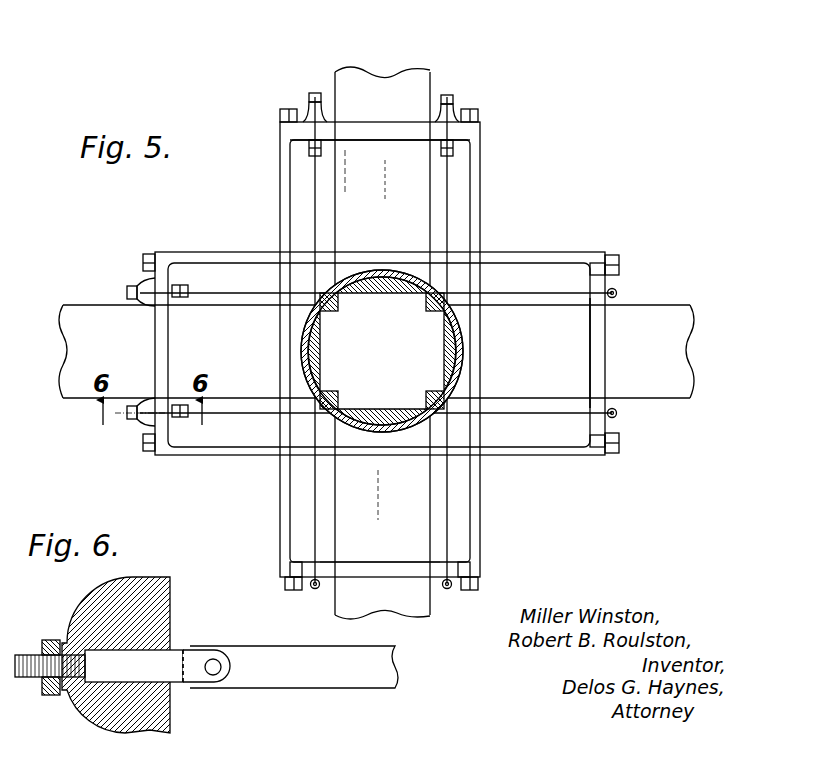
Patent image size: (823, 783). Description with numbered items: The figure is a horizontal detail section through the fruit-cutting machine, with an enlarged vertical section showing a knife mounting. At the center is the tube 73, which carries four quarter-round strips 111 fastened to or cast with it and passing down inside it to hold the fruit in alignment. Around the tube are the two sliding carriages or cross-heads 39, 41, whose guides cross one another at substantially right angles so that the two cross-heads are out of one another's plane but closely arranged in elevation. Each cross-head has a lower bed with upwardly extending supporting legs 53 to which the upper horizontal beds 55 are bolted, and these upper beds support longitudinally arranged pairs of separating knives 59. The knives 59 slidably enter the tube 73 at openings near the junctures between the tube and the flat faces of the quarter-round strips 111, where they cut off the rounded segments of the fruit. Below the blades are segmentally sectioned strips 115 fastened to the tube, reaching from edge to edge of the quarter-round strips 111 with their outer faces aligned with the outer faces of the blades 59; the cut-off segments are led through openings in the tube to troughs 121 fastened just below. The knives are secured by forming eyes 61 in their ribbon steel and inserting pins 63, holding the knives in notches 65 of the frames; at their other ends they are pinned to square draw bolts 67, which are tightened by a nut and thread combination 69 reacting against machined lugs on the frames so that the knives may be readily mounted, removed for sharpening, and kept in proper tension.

In FIG. 5, the cross-head 39 is at (245, 452).
In FIG. 5, the cross-head 41 is at (385, 130).
In FIG. 5, the supporting legs 53 is at (280, 118).
In FIG. 5, the upper horizontal beds 55 is at (480, 224).
In FIG. 6, the upper horizontal beds 55 is at (166, 577).
In FIG. 5, the separating knives 59 is at (549, 293).
In FIG. 6, the separating knives 59 is at (302, 686).
In FIG. 5, the eyes 61 is at (617, 292).
In FIG. 5, the pins 63 is at (606, 410).
In FIG. 5, the notches 65 is at (598, 312).
In FIG. 5, the draw bolts 67 is at (309, 150).
In FIG. 6, the draw bolts 67 is at (183, 686).
In FIG. 5, the nut and thread combination 69 is at (315, 93).
In FIG. 6, the nut and thread combination 69 is at (30, 655).
In FIG. 5, the tube 73 is at (395, 272).
In FIG. 5, the quarter-round strips 111 is at (426, 305).
In FIG. 5, the segmentally sectioned strips 115 is at (362, 278).
In FIG. 5, the troughs 121 is at (380, 72).